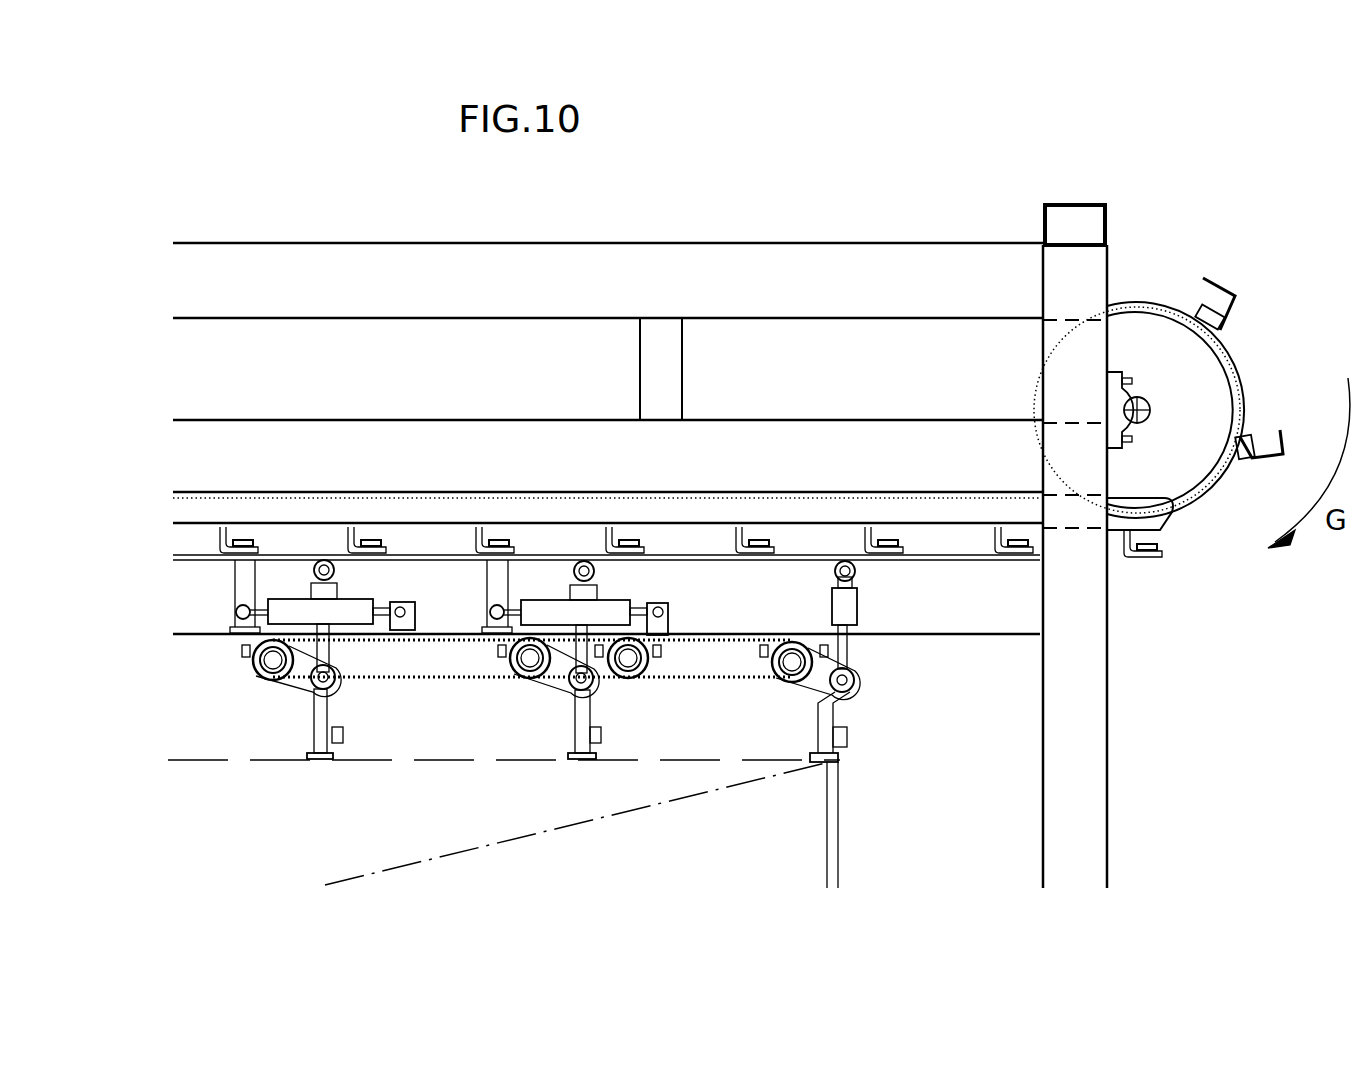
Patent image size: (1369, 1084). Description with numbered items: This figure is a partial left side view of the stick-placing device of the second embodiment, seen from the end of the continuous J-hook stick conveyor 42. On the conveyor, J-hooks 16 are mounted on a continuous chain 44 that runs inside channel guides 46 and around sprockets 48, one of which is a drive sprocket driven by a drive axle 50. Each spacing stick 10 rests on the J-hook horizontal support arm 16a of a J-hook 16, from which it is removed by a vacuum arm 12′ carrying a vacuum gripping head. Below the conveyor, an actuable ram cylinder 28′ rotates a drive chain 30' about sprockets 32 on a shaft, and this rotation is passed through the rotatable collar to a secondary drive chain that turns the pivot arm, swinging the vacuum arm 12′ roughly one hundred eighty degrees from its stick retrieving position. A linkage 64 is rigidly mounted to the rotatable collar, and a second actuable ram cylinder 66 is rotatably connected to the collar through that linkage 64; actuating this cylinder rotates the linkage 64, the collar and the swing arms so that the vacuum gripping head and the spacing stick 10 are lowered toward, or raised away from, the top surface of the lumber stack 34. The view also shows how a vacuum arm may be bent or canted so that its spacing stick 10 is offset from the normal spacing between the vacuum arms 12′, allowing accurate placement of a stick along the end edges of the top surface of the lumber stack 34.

The spacing stick 10 is at (1162, 547).
The vacuum arm 12′ is at (567, 737).
The J-hook 16 is at (1233, 297).
The J-hook horizontal support arm 16a is at (1133, 557).
The actuable ram cylinder 28′ is at (222, 638).
The drive chain 30' is at (606, 749).
The sprocket 32 is at (268, 655).
The lumber stack 34 is at (778, 858).
The continuous J-hook stick conveyor 42 is at (1200, 237).
The continuous chain 44 is at (1110, 307).
The channel guide 46 is at (750, 258).
The sprocket 48 is at (1223, 340).
The drive axle 50 is at (1147, 400).
The linkage 64 is at (292, 687).
The actuable ram cylinder 66 is at (847, 607).